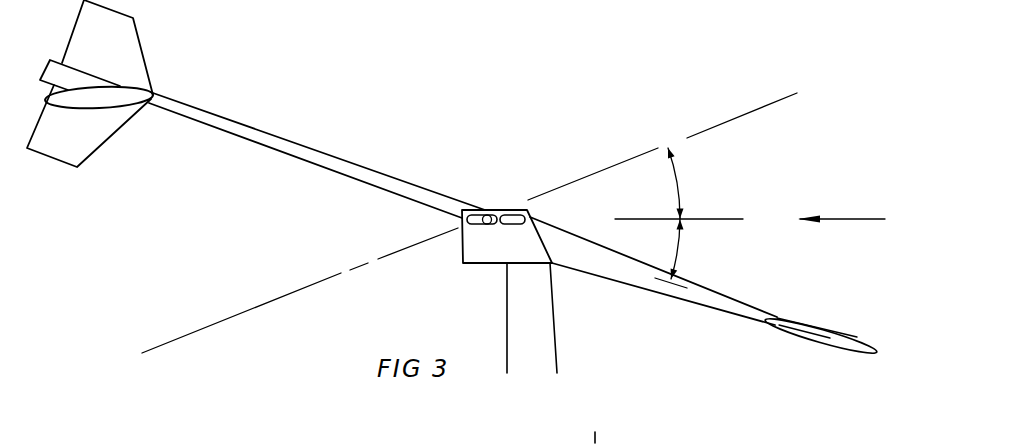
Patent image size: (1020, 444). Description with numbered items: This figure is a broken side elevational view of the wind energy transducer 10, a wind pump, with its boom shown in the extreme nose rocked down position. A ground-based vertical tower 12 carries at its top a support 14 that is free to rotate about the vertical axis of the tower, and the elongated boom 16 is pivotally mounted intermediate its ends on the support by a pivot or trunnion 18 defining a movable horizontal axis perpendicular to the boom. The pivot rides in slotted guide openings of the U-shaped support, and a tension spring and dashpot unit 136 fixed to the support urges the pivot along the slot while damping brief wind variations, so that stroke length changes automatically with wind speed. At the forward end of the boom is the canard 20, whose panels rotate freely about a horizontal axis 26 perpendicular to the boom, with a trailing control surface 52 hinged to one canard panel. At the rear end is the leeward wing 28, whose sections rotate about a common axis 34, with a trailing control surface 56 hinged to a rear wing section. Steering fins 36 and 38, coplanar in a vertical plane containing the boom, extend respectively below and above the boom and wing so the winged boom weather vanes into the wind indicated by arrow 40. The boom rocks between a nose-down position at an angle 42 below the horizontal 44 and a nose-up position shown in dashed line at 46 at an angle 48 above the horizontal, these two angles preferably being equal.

The wind energy transducer 10 is at (596, 146).
The vertical mast or tower 12 is at (543, 330).
The support 14 is at (505, 229).
The boom 16 is at (400, 180).
The pivot or trunnion 18 is at (485, 214).
The tension spring and dashpot unit 136 is at (518, 216).
The forward wing or canard 20 is at (824, 358).
The axis of canard panels 26 is at (847, 343).
The control surface 52 is at (768, 325).
The rear wing or airfoil 28 is at (107, 122).
The axis of rear wing sections 34 is at (121, 100).
The lower steering fin 36 is at (103, 142).
The upper steering fin 38 is at (128, 53).
The control surface 56 is at (45, 107).
The wind arrow 40 is at (842, 219).
The nose-down angle 42 is at (683, 253).
The horizontal 44 is at (730, 219).
The nose-up boom position 46 is at (738, 117).
The nose-up angle 48 is at (681, 185).